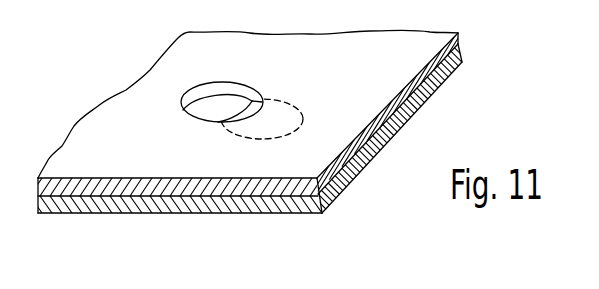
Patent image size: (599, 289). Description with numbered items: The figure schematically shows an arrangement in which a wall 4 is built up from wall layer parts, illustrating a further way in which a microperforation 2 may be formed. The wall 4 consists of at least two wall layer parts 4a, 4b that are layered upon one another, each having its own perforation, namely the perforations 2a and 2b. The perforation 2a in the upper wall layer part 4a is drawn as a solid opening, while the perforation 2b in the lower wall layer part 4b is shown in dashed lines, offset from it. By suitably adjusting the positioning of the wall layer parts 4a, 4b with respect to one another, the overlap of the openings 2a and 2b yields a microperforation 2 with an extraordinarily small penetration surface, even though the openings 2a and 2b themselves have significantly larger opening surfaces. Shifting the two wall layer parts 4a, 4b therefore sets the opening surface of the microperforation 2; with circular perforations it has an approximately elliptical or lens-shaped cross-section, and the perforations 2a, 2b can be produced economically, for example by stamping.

The microperforation 2 is at (242, 91).
The perforation 2a is at (205, 93).
The perforation 2b is at (293, 108).
The wall 4 is at (296, 111).
The wall layer part 4a is at (462, 37).
The wall layer part 4b is at (522, 22).